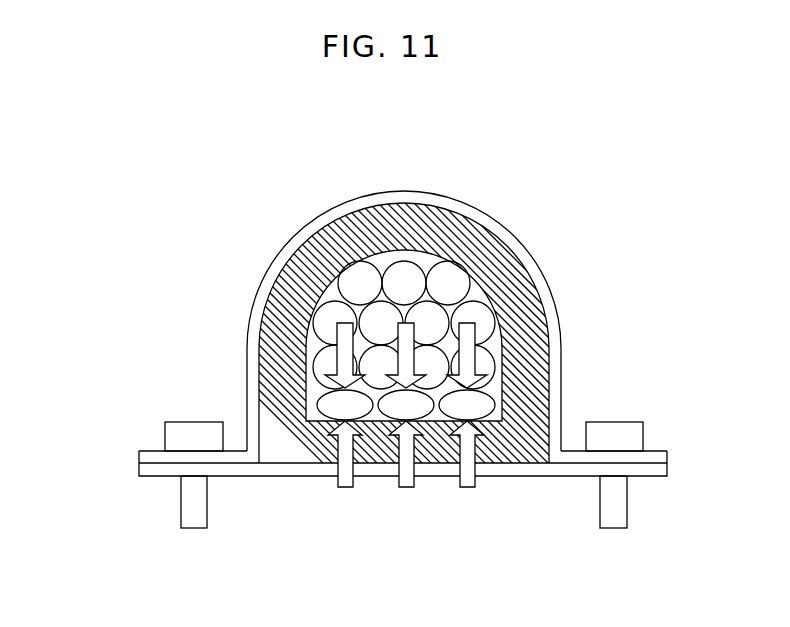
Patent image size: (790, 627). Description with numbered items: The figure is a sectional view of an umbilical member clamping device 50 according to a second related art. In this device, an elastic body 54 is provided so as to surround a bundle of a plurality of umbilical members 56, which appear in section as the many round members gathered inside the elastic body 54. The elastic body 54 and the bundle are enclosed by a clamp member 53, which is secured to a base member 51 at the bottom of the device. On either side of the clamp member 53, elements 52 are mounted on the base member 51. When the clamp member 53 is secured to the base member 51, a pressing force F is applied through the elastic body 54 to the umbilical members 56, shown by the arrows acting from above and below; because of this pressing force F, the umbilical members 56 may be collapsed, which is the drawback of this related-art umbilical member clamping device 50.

The umbilical member clamping device 50 is at (60, 111).
The base member 51 is at (654, 477).
The light emitting element 52 is at (170, 422).
The clamp member 53 is at (523, 242).
The elastic body 54 is at (313, 263).
The umbilical members 56 is at (460, 273).
The pressing force F is at (468, 338).